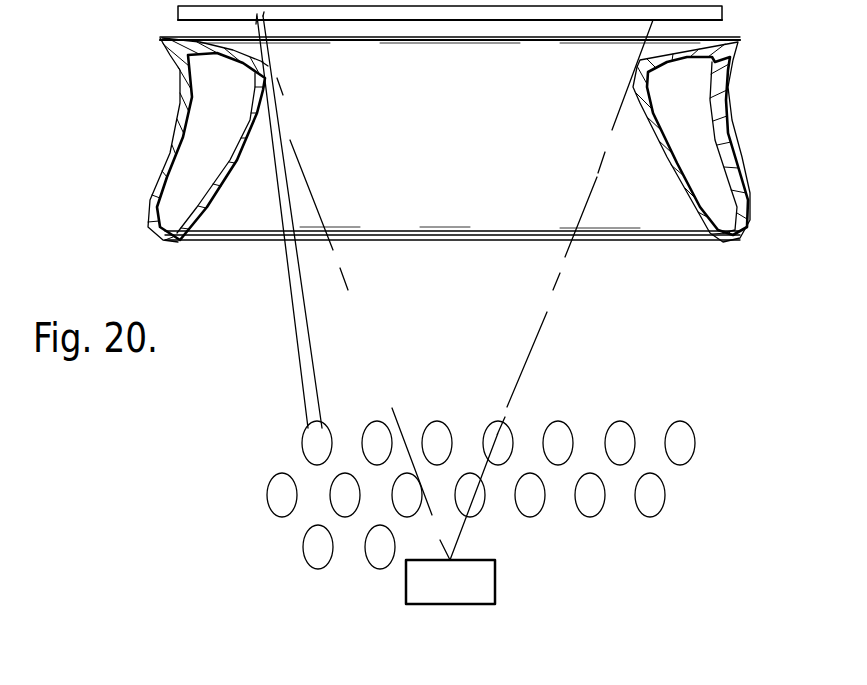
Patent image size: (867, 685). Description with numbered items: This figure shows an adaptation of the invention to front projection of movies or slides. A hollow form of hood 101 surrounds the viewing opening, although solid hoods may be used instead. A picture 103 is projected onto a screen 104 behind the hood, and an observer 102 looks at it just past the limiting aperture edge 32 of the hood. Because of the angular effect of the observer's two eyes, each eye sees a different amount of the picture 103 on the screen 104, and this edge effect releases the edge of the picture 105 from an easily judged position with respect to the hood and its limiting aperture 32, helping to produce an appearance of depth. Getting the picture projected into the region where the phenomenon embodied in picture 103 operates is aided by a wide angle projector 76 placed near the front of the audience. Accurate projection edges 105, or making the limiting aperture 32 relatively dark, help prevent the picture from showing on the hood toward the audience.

The limiting aperture edge 32 is at (266, 63).
The wide angle projector 76 is at (495, 588).
The hollow hood 101 is at (703, 213).
The observer 102 is at (300, 442).
The picture on the screen 103 is at (256, 24).
The screen 104 is at (468, 20).
The edge of the picture 105 is at (252, 20).